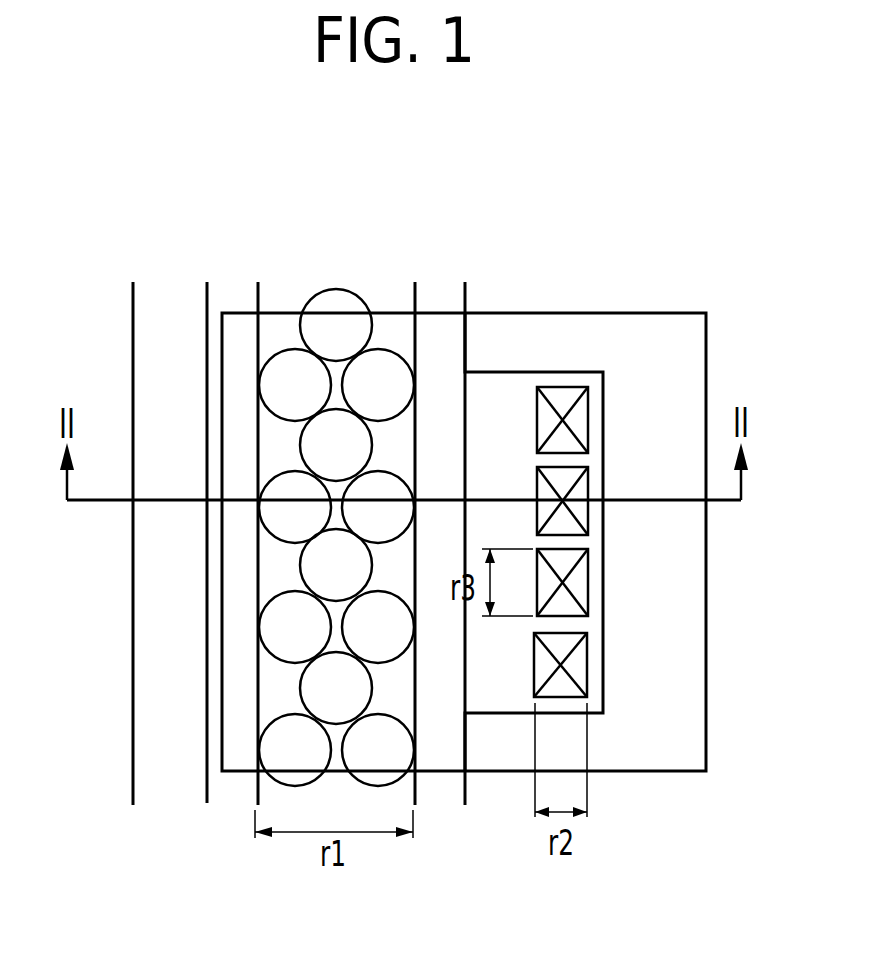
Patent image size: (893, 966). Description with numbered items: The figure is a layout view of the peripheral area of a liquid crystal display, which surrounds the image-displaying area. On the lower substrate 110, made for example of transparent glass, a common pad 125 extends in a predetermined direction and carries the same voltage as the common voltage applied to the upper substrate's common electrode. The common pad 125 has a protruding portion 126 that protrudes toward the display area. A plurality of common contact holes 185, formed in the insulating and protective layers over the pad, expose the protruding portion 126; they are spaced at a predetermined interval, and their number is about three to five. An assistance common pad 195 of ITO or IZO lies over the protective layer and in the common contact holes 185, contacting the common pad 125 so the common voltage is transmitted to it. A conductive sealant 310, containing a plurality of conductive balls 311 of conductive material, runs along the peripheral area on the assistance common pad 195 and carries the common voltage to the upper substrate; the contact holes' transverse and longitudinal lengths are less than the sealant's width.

The lower substrate 110 is at (133, 747).
The common pad 125 is at (206, 793).
The protruding portion 126 is at (603, 675).
The common contact holes 185 is at (588, 582).
The assistance common pad 195 is at (706, 341).
The conductive sealant 310 is at (415, 295).
The conductive balls 311 is at (300, 563).